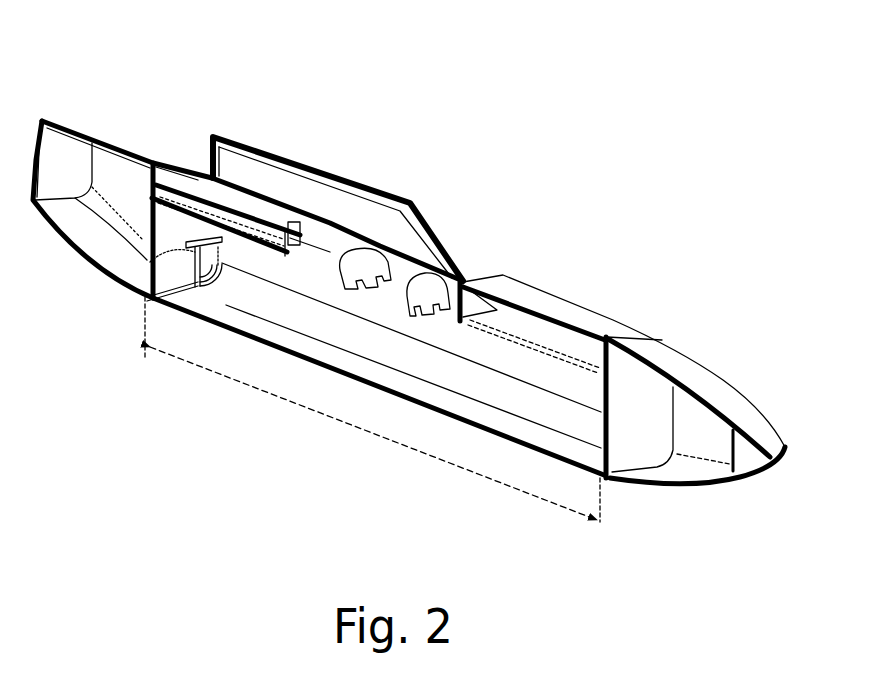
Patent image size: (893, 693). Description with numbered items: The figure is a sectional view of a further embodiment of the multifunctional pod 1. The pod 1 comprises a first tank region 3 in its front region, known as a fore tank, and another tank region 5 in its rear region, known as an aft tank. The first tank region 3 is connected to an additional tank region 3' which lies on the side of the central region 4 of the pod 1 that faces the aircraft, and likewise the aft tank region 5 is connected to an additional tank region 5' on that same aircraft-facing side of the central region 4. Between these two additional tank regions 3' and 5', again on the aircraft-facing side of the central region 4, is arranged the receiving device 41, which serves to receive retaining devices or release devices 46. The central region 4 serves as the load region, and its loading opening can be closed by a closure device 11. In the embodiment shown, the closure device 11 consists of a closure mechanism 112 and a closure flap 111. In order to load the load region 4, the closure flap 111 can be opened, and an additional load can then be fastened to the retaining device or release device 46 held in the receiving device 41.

The multifunctional pod 1 is at (292, 114).
The tank region 5 is at (91, 157).
The additional tank region 5' is at (241, 162).
The receiving device 41 is at (317, 228).
The retaining device or release device 46 is at (398, 288).
The additional tank region 3' is at (561, 307).
The first tank region 3 is at (688, 402).
The closure mechanism 112 is at (150, 262).
The closure device 11 is at (143, 305).
The closure flap 111 is at (223, 305).
The central region 4 is at (372, 409).